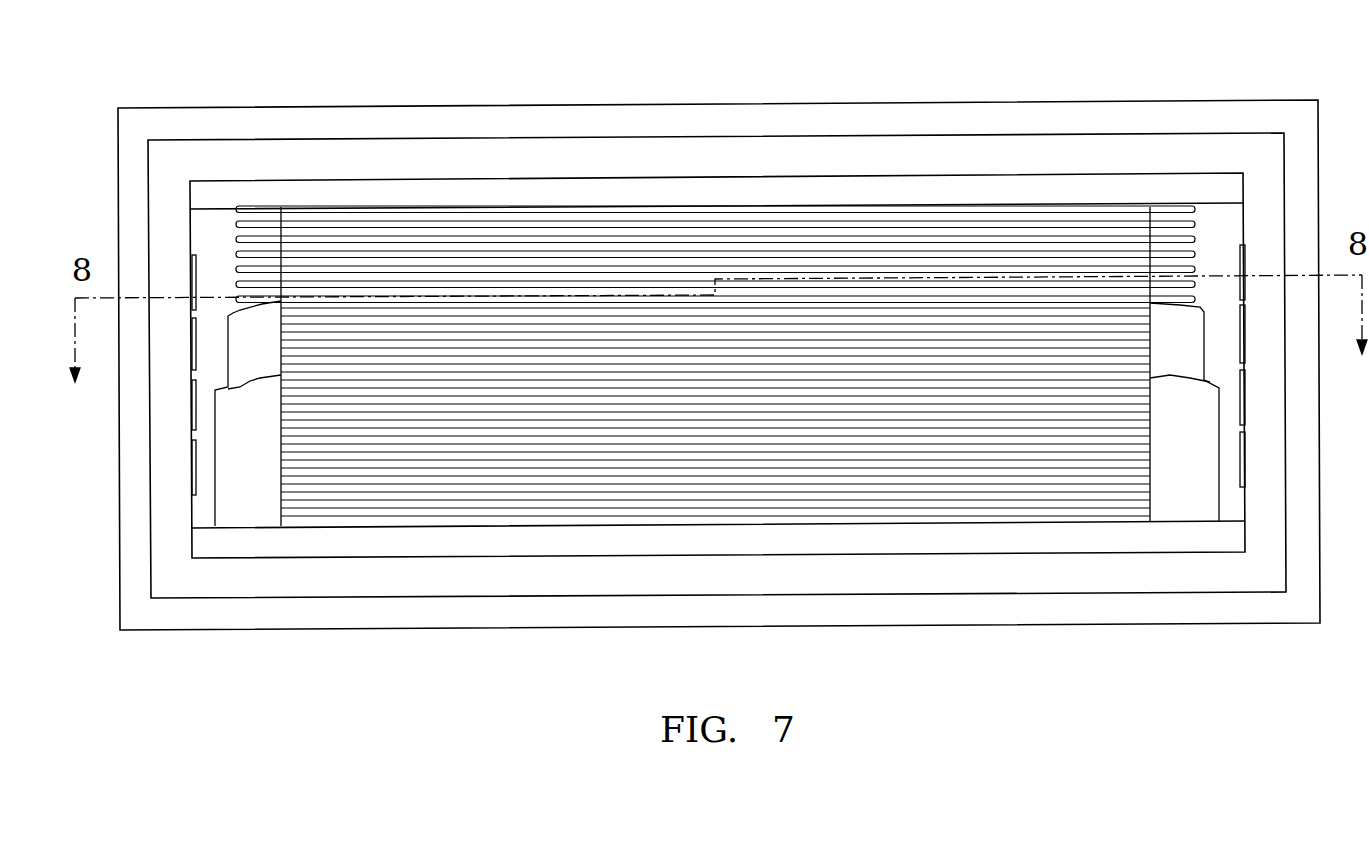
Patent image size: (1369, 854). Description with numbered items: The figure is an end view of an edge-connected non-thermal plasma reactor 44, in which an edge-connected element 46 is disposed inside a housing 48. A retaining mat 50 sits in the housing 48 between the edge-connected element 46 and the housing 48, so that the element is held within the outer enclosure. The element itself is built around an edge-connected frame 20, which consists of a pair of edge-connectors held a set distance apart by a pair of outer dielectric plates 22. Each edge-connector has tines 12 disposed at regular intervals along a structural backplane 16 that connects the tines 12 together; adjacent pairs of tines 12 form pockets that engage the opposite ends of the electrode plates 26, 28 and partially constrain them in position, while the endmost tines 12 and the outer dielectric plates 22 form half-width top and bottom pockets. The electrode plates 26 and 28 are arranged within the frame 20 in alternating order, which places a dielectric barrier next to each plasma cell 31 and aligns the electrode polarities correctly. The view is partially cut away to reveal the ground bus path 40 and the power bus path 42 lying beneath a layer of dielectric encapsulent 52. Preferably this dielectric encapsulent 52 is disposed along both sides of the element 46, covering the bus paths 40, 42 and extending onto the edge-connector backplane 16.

The tines 12 is at (715, 379).
The structural backplane 16 is at (205, 498).
The edge-connected frame 20 is at (379, 181).
The outer dielectric plates 22 is at (608, 195).
The electrode plate 26 is at (578, 511).
The electrode plate 28 is at (632, 494).
The plasma cell 31 is at (882, 503).
The ground bus path 40 is at (1182, 333).
The power bus path 42 is at (236, 327).
The edge-connected non-thermal plasma reactor 44 is at (108, 128).
The edge-connected element 46 is at (248, 181).
The housing 48 is at (1212, 602).
The retaining mat 50 is at (1268, 568).
The dielectric encapsulent 52 is at (256, 507).